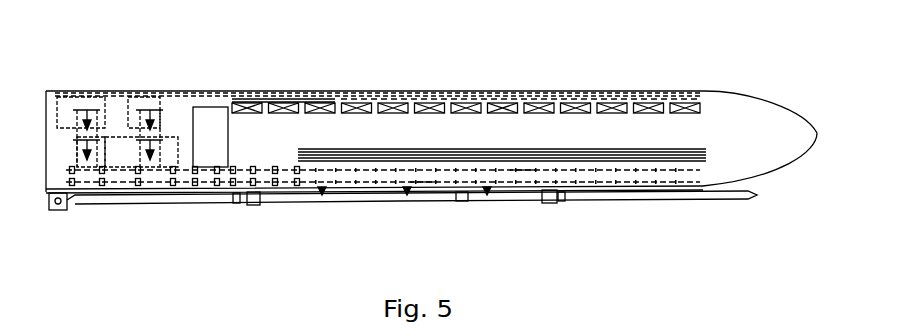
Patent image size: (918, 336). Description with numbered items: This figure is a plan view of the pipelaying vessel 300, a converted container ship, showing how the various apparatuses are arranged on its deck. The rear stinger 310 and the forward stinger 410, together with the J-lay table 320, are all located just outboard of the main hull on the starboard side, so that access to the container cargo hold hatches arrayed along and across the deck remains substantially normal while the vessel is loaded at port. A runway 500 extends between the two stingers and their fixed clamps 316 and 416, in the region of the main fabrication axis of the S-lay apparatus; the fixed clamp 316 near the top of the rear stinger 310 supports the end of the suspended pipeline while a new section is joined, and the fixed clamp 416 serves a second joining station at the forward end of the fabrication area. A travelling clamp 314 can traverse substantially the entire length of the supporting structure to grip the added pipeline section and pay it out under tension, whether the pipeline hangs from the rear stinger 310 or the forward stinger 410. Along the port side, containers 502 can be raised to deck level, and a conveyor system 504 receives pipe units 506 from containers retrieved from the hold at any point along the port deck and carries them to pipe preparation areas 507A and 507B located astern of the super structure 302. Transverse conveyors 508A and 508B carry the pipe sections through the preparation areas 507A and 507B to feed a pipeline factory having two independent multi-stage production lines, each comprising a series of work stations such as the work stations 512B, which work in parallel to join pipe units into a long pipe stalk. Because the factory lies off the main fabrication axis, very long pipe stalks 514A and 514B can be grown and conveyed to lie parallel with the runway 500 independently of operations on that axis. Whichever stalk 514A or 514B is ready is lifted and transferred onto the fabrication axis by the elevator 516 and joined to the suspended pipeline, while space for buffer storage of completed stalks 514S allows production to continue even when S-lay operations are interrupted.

The vessel 300 is at (777, 102).
The super structure 302 is at (206, 106).
The rear stinger 310 is at (132, 203).
The travelling clamp 314 is at (462, 203).
The fixed clamp 316 is at (253, 206).
The J-lay table 320 is at (54, 212).
The upper portion of second stinger 410 is at (658, 201).
The fixed clamp 416 is at (552, 204).
The runway 500 is at (307, 204).
The containers 502 is at (512, 103).
The conveyor system 504 is at (192, 92).
The pipe units 506 is at (318, 95).
The pipe preparation area 507A is at (127, 134).
The pipe preparation area 507B is at (58, 118).
The transverse conveyor 508A is at (140, 121).
The transverse conveyor 508B is at (77, 148).
The work stations 512B is at (298, 186).
The pipe stalk 514A is at (522, 173).
The pipe stalk 514B is at (423, 183).
The buffer storage of completed stalks 514S is at (568, 149).
The elevator 516 is at (407, 191).